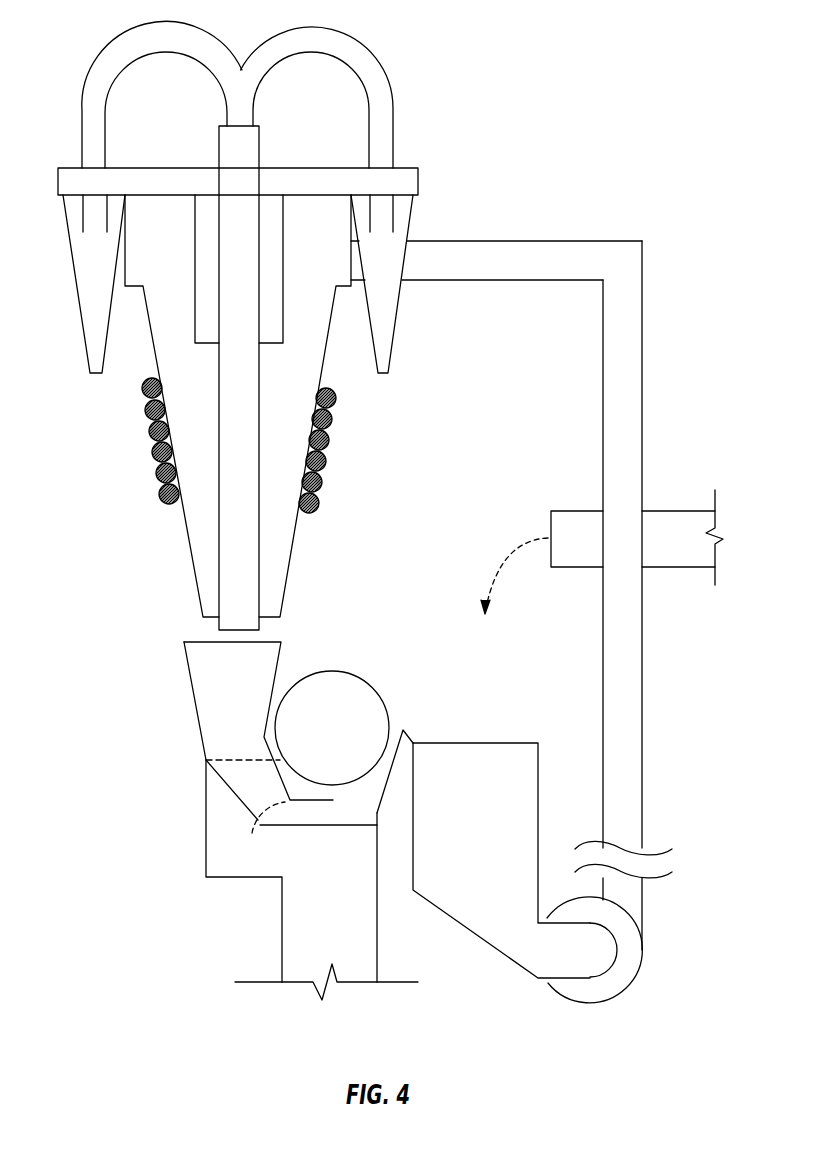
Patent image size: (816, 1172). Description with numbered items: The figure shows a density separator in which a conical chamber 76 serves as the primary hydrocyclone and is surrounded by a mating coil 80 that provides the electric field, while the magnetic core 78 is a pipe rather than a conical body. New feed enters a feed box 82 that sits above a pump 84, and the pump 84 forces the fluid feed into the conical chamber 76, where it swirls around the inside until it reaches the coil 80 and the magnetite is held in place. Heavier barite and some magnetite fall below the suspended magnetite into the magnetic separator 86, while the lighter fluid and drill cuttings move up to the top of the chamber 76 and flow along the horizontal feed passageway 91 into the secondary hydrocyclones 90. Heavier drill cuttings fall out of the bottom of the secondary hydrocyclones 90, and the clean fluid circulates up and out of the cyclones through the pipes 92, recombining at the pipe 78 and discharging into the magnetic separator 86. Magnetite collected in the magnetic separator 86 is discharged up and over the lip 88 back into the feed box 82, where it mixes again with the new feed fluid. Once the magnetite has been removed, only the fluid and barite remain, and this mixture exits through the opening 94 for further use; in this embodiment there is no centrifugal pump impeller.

The conical chamber 76 is at (185, 530).
The core 78 is at (220, 412).
The coil 80 is at (327, 440).
The feed box 82 is at (538, 833).
The pump 84 is at (587, 1000).
The magnetic separator 86 is at (332, 670).
The lip 88 is at (405, 732).
The secondary hydrocyclones 90 is at (83, 337).
The horizontal feed passageway 91 is at (323, 168).
The pipes 92 is at (397, 113).
The opening 94 is at (297, 920).